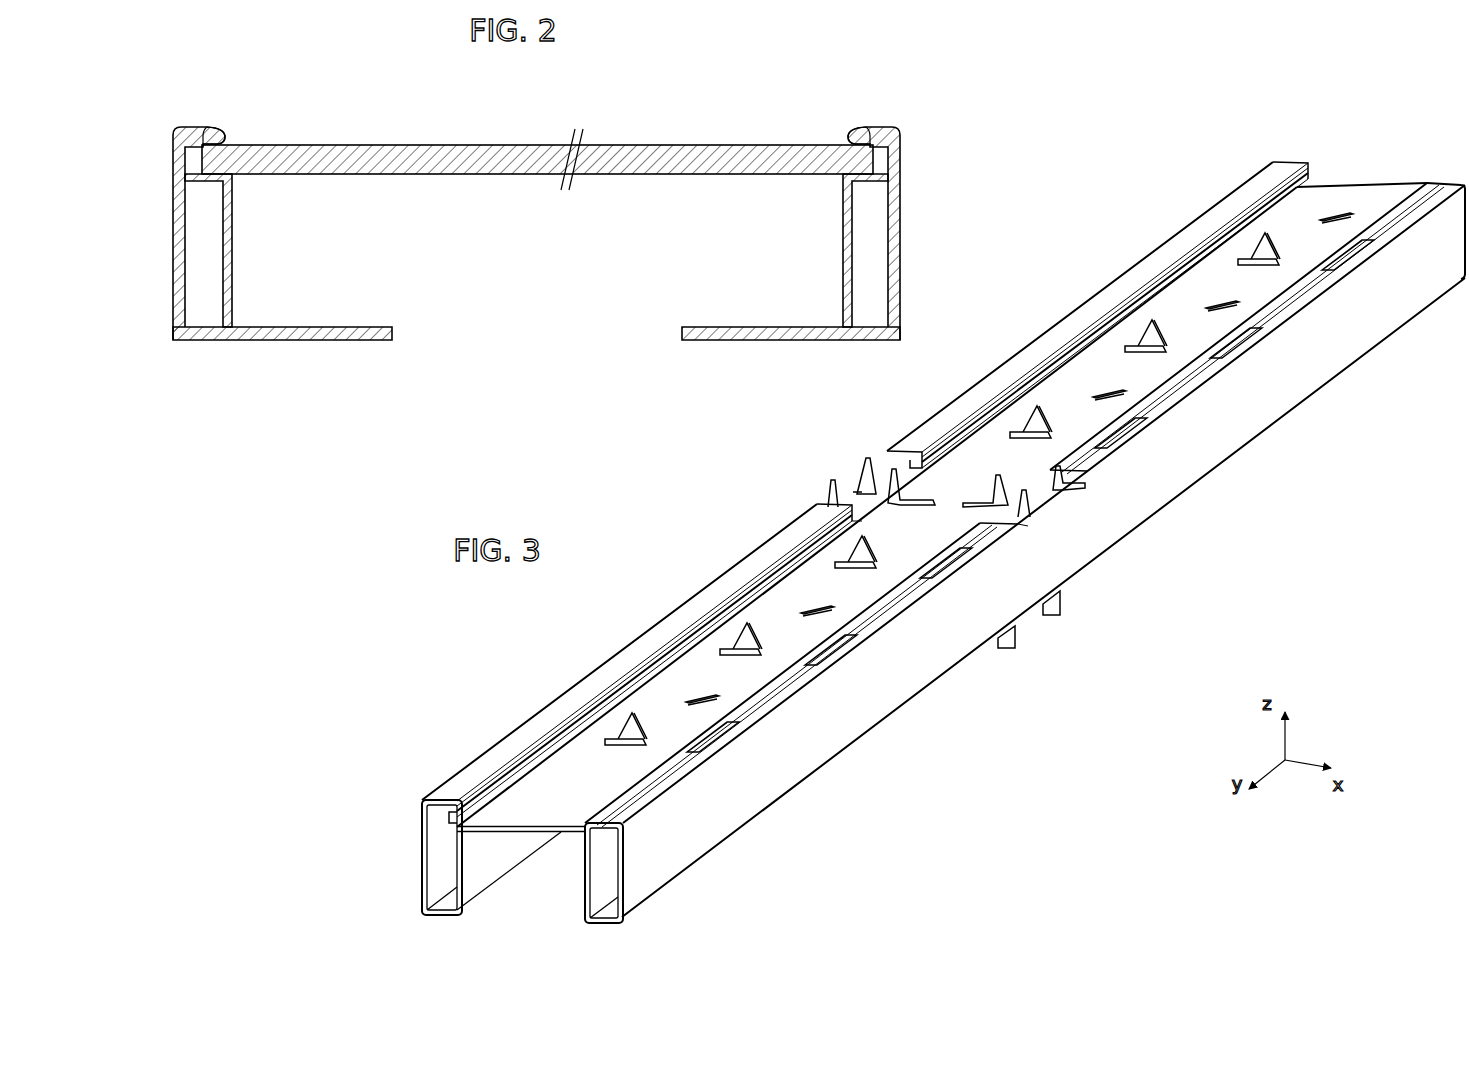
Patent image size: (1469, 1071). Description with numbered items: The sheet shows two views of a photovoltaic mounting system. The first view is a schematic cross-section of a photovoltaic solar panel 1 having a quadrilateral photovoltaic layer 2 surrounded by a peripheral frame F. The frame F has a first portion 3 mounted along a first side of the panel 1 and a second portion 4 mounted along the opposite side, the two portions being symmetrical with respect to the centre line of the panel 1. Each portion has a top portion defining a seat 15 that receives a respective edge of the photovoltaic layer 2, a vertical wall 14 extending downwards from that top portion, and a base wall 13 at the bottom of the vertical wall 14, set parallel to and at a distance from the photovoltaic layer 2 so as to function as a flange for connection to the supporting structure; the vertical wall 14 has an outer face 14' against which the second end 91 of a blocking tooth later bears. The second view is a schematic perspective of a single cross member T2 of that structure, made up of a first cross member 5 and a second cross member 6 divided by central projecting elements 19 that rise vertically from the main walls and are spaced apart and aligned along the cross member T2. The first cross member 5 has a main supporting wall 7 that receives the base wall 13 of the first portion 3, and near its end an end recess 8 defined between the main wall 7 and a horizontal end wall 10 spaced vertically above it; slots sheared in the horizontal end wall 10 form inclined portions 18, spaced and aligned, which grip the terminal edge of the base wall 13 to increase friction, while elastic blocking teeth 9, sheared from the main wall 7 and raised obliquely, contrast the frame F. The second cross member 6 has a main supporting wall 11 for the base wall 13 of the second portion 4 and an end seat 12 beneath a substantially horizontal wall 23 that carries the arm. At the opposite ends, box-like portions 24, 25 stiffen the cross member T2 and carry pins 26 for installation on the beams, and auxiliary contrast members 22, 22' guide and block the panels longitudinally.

In FIG. 2, the photovoltaic solar panel 1 is at (690, 133).
In FIG. 2, the photovoltaic layer 2 is at (440, 145).
In FIG. 2, the first portion 3 is at (161, 233).
In FIG. 2, the second portion 4 is at (840, 268).
In FIG. 2, the peripheral frame F is at (161, 203).
In FIG. 2, the second end 91 is at (177, 300).
In FIG. 2, the base wall 13 is at (525, 328).
In FIG. 2, the vertical wall 14 is at (536, 250).
In FIG. 2, the outer face 14' is at (271, 360).
In FIG. 2, the seat 15 is at (222, 135).
In FIG. 3, the cross member T2 is at (1197, 175).
In FIG. 3, the first cross member 5 is at (1043, 550).
In FIG. 3, the second cross member 6 is at (1112, 275).
In FIG. 3, the main supporting wall 7 is at (1155, 365).
In FIG. 3, the end recess 8 is at (605, 838).
In FIG. 3, the elastic blocking tooth 9 is at (1215, 300).
In FIG. 3, the horizontal end wall 10 is at (1437, 190).
In FIG. 3, the main supporting wall 11 is at (955, 440).
In FIG. 3, the end seat 12 is at (1310, 180).
In FIG. 3, the inclined portion 18 is at (1365, 252).
In FIG. 3, the central projecting element 19 is at (1258, 232).
In FIG. 3, the auxiliary contrast member 22 is at (932, 504).
In FIG. 3, the auxiliary contrast member 22' is at (918, 481).
In FIG. 3, the substantially horizontal wall 23 is at (1046, 342).
In FIG. 3, the box-like portion 24 is at (658, 878).
In FIG. 3, the box-like portion 25 is at (420, 860).
In FIG. 3, the pin 26 is at (1050, 620).